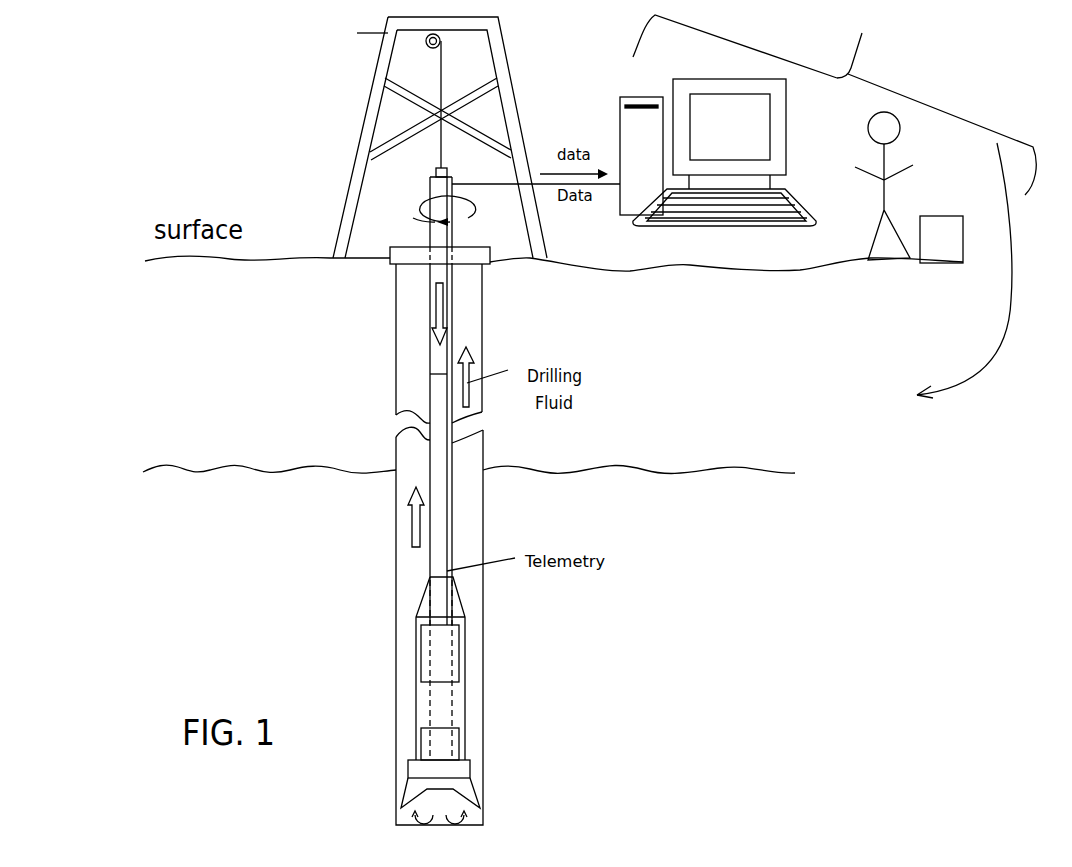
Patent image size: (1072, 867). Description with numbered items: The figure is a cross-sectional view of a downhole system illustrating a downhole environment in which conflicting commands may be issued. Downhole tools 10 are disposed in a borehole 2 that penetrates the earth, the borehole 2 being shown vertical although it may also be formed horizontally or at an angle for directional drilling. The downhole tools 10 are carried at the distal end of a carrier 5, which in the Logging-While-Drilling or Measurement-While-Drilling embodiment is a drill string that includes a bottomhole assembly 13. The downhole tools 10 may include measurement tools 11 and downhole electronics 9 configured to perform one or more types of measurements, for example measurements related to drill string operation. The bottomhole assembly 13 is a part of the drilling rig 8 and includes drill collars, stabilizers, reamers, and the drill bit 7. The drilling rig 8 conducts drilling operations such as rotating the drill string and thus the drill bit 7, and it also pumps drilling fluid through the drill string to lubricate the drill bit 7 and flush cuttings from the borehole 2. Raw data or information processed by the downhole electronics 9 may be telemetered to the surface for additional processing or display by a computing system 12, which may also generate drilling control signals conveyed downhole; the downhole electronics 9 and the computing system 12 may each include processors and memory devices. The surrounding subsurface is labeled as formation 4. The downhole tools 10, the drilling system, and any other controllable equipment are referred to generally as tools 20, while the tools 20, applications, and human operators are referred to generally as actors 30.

The borehole 2 is at (405, 387).
The formation 4 is at (215, 527).
The carrier 5 is at (428, 460).
The drill bit 7 is at (415, 786).
The drilling rig 8 is at (322, 205).
The downhole electronics 9 is at (459, 668).
The downhole tools 10 is at (404, 645).
The measurement tools 11 is at (460, 730).
The computing system 12 is at (638, 97).
The bottomhole assembly 13 is at (470, 770).
The tools 20 is at (952, 202).
The actors 30 is at (834, 206).